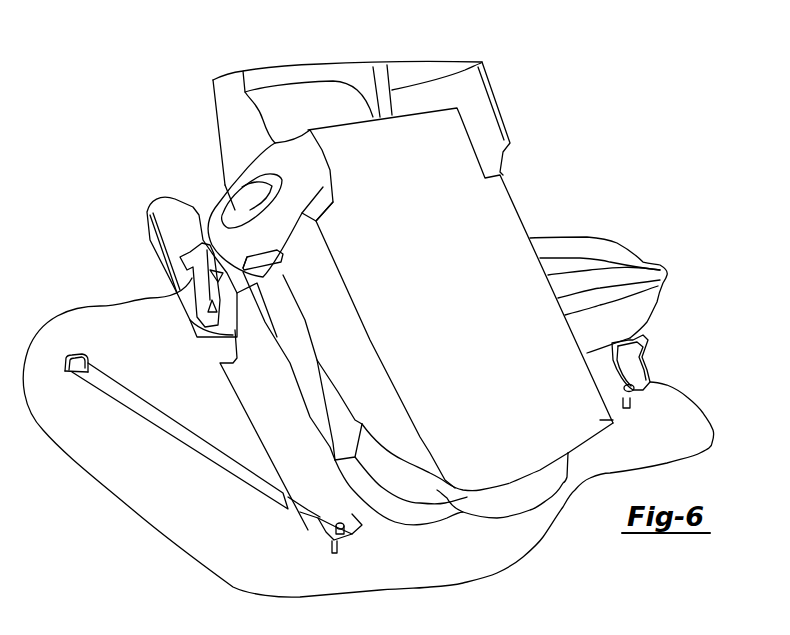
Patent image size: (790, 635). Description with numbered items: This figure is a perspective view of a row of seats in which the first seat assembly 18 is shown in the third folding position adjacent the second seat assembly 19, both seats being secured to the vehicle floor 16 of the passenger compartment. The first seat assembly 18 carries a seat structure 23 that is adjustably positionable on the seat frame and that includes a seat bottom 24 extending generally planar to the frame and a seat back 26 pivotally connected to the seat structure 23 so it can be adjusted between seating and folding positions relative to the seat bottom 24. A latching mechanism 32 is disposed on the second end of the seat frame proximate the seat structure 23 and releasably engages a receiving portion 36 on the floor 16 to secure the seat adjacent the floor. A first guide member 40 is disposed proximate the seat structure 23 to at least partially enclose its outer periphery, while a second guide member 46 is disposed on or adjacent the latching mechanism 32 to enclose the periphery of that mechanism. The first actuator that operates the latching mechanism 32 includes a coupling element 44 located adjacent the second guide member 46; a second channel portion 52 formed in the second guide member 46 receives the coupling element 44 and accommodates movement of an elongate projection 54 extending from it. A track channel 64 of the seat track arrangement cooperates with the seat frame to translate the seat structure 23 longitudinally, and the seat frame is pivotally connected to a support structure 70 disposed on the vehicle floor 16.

The floor 16 is at (97, 480).
The first seat assembly 18 is at (489, 218).
The second seat assembly 19 is at (496, 90).
The seat structure 23 is at (216, 212).
The seat bottom 24 is at (297, 448).
The seat back 26 is at (607, 420).
The latching mechanism 32 is at (147, 242).
The receiving portion 36 is at (77, 354).
The first guide member 40 is at (238, 187).
The coupling element 44 is at (186, 305).
The second guide member 46 is at (167, 253).
The second channel portion 52 is at (148, 220).
The elongate projection 54 is at (218, 290).
The track channel 64 is at (125, 407).
The support structure 70 is at (290, 509).